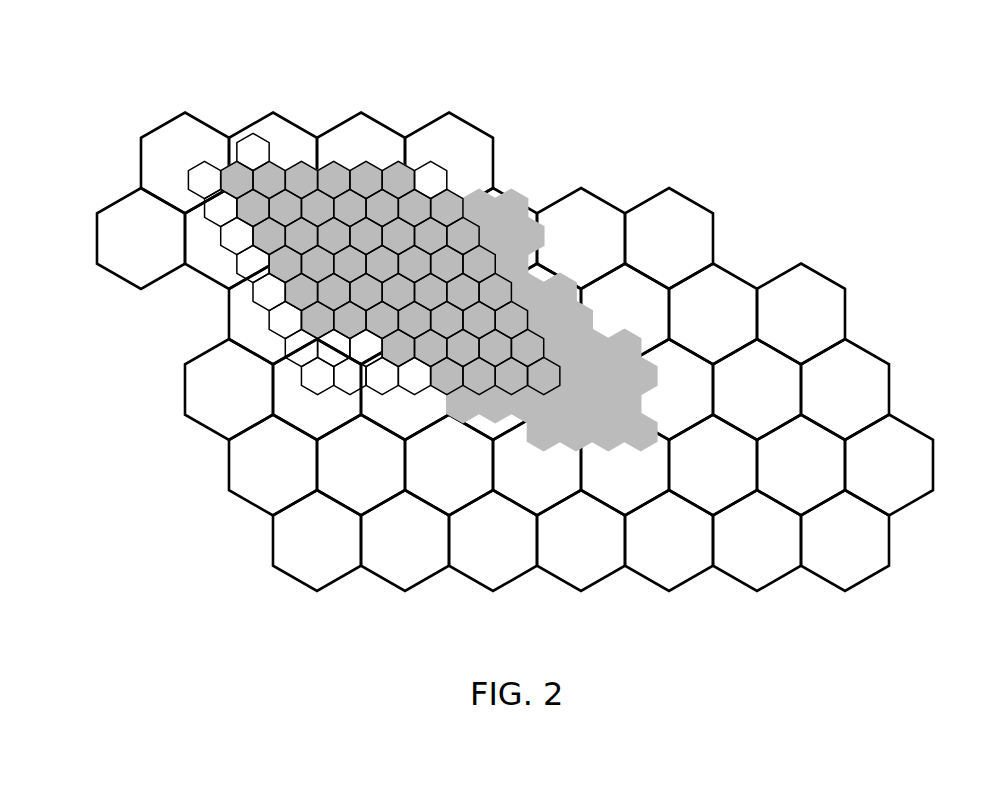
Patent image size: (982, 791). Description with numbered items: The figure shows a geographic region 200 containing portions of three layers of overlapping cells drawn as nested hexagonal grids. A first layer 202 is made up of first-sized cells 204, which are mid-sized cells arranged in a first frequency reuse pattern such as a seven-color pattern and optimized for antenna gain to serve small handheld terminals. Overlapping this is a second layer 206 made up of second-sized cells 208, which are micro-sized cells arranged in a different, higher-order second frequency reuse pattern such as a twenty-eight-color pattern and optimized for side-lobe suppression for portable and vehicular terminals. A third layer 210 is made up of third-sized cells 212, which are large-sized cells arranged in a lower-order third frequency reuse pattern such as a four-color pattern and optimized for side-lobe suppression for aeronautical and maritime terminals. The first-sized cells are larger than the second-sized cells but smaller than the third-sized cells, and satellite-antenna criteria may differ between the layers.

The geographic region 200 is at (523, 300).
The first layer 202 is at (230, 265).
The first-sized cells 204 is at (246, 136).
The second layer 206 is at (439, 334).
The second-sized cells 208 is at (568, 262).
The third layer 210 is at (523, 352).
The third-sized cells 212 is at (733, 270).